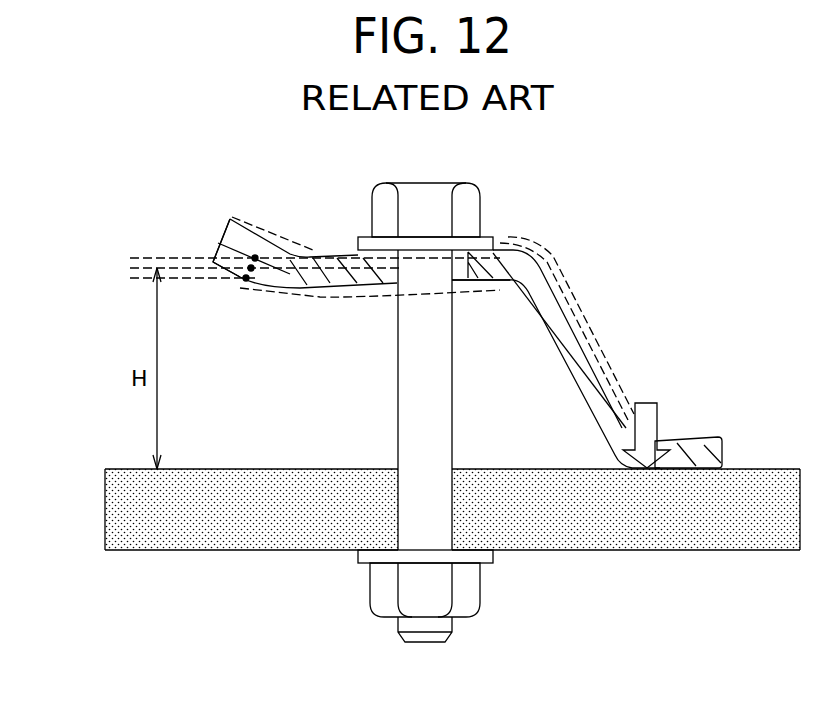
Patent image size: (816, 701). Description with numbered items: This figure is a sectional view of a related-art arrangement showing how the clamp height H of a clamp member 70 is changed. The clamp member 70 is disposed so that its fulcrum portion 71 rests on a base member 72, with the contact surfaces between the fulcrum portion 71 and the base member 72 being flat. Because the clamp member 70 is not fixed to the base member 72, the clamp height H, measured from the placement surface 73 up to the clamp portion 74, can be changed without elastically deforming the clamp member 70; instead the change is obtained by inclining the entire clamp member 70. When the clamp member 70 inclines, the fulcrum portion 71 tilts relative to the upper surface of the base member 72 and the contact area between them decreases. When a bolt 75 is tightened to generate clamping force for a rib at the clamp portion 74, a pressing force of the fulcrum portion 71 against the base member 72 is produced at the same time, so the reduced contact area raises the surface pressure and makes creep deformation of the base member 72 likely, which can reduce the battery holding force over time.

The clamp member 70 is at (598, 343).
The fulcrum portion 71 is at (676, 445).
The base member 72 is at (277, 535).
The placement surface 73 is at (276, 469).
The clamp portion 74 is at (268, 258).
The bolt 75 is at (417, 396).